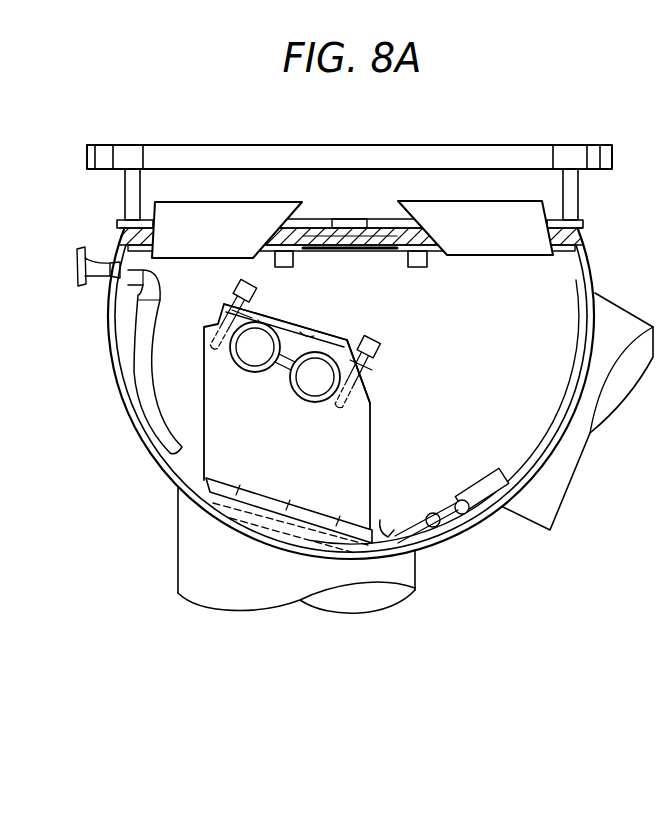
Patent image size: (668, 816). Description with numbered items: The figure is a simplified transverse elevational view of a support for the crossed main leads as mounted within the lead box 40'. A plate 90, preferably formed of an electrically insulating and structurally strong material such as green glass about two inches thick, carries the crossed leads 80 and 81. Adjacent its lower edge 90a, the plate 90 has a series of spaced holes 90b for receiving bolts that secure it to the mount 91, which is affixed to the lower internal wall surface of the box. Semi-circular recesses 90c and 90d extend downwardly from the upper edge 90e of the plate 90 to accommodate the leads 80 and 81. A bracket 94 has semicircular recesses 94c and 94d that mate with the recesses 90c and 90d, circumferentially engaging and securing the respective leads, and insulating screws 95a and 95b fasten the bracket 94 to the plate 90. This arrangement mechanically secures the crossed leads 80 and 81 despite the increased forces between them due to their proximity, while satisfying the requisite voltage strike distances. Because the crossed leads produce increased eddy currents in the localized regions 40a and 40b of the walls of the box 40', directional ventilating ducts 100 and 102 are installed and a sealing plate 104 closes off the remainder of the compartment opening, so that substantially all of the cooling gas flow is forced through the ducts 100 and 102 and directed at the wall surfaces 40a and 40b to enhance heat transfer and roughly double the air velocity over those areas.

The lead box 40' is at (365, 416).
The localized wall region 40a is at (165, 490).
The localized wall region 40b is at (428, 550).
The crossed lead 80 is at (347, 347).
The crossed lead 81 is at (281, 322).
The plate 90 is at (371, 462).
The lower edge 90a is at (237, 516).
The spaced holes 90b is at (360, 533).
The semi-circular recess 90c is at (308, 400).
The semi-circular recess 90d is at (246, 370).
The upper edge 90e is at (371, 398).
The mount 91 is at (386, 523).
The bracket 94 is at (313, 327).
The semicircular recess 94c is at (354, 348).
The semicircular recess 94d is at (266, 322).
The insulating screw 95a is at (378, 355).
The insulating screw 95b is at (233, 290).
The directional ventilating duct 100 is at (471, 202).
The directional ventilating duct 102 is at (176, 203).
The sealing plate 104 is at (346, 230).